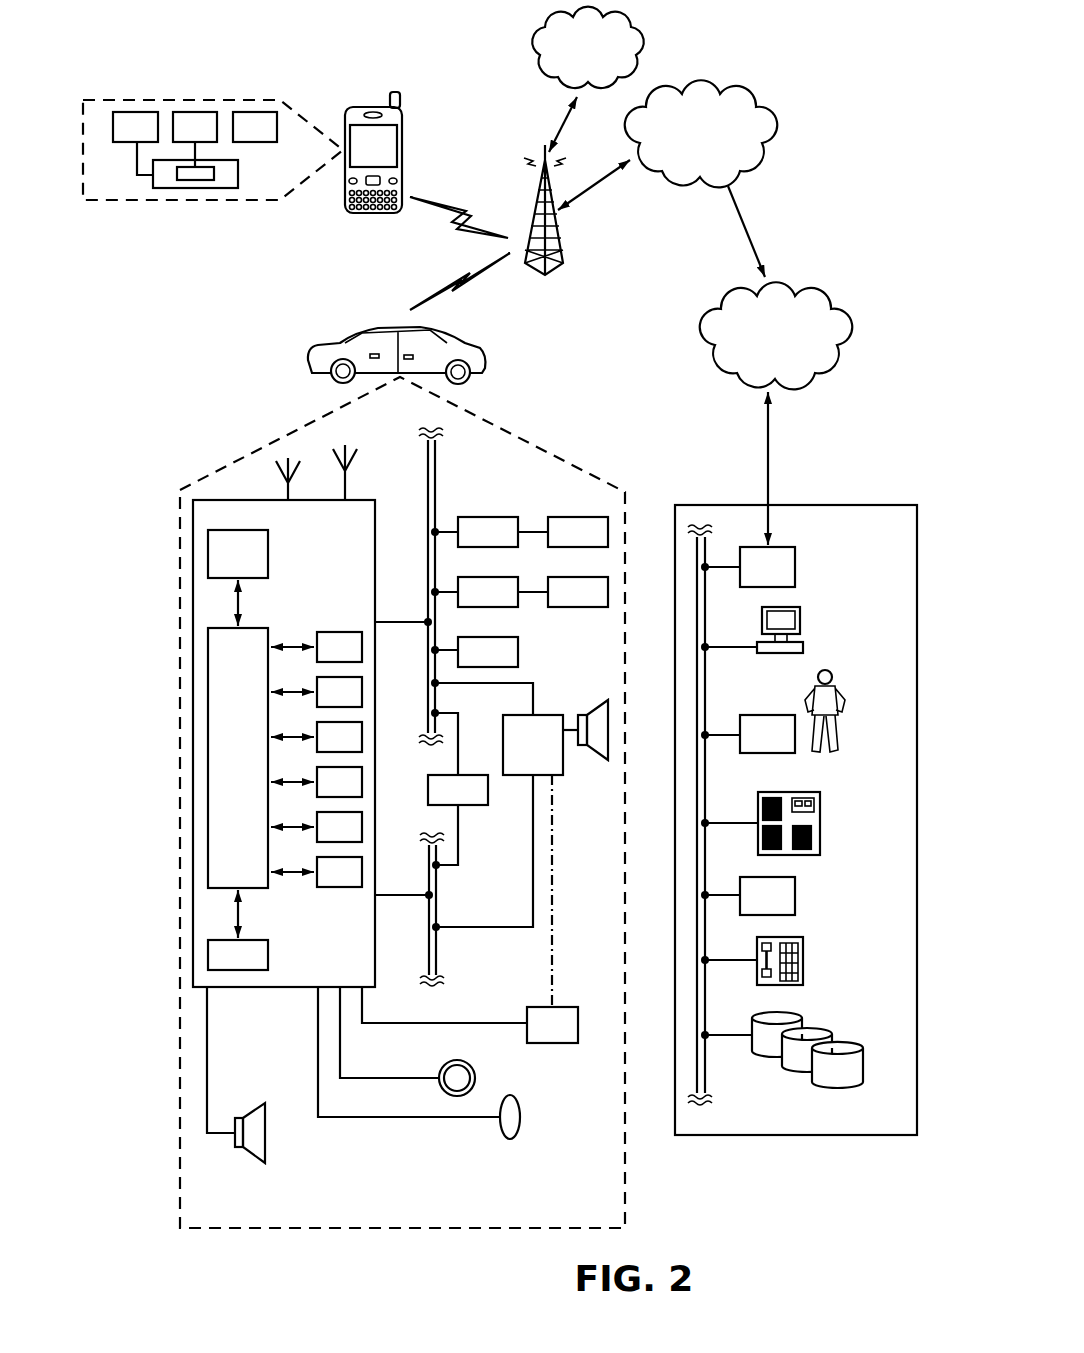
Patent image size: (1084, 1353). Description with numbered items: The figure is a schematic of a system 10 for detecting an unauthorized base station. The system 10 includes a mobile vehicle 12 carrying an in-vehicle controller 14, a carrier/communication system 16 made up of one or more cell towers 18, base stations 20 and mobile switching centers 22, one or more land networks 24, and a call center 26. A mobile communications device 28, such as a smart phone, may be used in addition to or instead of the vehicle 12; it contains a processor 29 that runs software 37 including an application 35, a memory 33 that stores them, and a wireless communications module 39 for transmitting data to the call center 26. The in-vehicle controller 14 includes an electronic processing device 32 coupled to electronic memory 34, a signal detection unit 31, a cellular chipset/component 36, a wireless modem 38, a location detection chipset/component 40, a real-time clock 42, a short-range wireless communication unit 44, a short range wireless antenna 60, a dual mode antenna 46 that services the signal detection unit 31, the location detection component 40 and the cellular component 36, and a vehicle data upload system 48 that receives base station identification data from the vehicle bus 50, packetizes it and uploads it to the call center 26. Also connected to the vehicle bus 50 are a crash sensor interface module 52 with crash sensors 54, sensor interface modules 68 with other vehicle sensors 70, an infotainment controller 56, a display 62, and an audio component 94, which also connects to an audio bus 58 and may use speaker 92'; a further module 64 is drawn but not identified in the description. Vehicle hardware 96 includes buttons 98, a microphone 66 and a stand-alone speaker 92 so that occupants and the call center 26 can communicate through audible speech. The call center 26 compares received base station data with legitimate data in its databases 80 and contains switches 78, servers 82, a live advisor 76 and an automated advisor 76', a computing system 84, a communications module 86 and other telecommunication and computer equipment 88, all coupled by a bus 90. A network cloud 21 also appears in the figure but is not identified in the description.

The system 10 is at (847, 180).
The mobile vehicle 12 is at (392, 325).
The in-vehicle controller 14 is at (284, 793).
The carrier/communication system 16 is at (622, 196).
The cell tower 18 is at (535, 201).
The base station 20 is at (701, 133).
The internet / remote network 21 is at (574, 62).
The mobile switching center 22 is at (728, 146).
The land network 24 is at (763, 348).
The call center 26 is at (796, 847).
The mobile communications device 28 is at (403, 133).
The processor 29 is at (144, 141).
The signal detection unit 31 is at (230, 569).
The electronic processing device 32 is at (230, 784).
The memory 33 is at (204, 141).
The electronic memory 34 is at (331, 661).
The application 35 is at (192, 188).
The cellular chipset/component 36 is at (331, 706).
The software 37 is at (238, 175).
The wireless modem 38 is at (331, 751).
The wireless communications module 39 is at (264, 141).
The location detection chipset/component 40 is at (331, 796).
The real-time clock 42 is at (331, 841).
The short-range wireless communication unit 44 is at (230, 969).
The dual mode antenna 46 is at (348, 490).
The vehicle data upload system 48 is at (331, 886).
The vehicle bus 50 is at (428, 655).
The crash and/or collision sensor interface module 52 is at (480, 546).
The crash and/or collision sensors 54 is at (570, 546).
The in-vehicle infotainment controller 56 is at (450, 804).
The audio bus 58 is at (429, 912).
The short range wireless antenna 60 is at (284, 493).
The display 62 is at (544, 1038).
The vehicle system module 64 is at (480, 666).
The microphone 66 is at (520, 1117).
The sensor interface modules 68 is at (480, 606).
The other vehicle sensors 70 is at (570, 606).
The live advisor 76 is at (821, 617).
The automated call response system 76' is at (854, 696).
The switch 78 is at (760, 582).
The database 80 is at (863, 1065).
The server 82 is at (820, 823).
The computing system 84 is at (760, 749).
The communications module 86 is at (760, 911).
The telecommunication and computer equipment 88 is at (803, 960).
The bus 90 is at (705, 1065).
The speaker 92 is at (225, 1096).
The speaker 92' is at (592, 770).
The vehicle audio component 94 is at (525, 757).
The hardware 96 is at (388, 1228).
The buttons 98 is at (476, 1075).